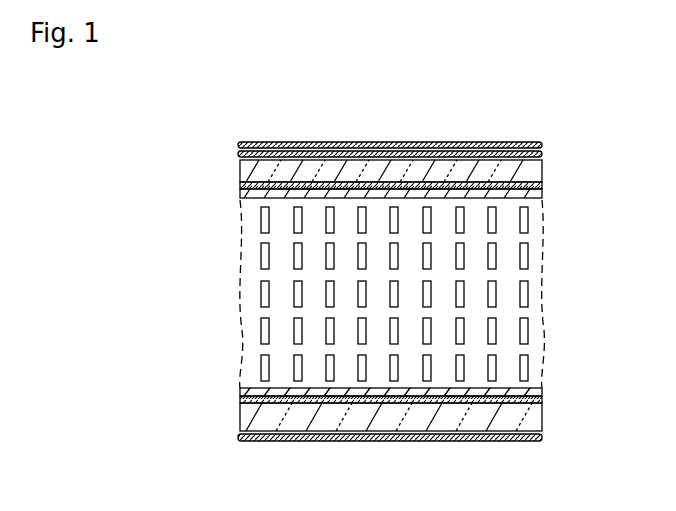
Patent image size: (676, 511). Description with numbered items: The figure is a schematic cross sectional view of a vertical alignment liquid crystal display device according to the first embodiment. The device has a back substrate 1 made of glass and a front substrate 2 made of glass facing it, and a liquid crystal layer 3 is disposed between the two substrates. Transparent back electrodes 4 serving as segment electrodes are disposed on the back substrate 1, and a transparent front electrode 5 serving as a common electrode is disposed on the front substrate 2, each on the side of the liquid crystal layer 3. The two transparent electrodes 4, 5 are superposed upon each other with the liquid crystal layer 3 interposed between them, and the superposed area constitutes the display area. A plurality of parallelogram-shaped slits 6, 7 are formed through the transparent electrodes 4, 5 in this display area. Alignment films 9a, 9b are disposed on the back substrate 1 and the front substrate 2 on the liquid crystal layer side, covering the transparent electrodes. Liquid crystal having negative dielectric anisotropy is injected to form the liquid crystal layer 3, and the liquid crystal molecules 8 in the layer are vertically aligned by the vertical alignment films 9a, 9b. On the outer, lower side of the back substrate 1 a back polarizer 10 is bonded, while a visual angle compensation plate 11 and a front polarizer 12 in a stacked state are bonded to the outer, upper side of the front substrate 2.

The back substrate 1 is at (236, 414).
The front substrate 2 is at (236, 174).
The liquid crystal layer 3 is at (556, 197).
The transparent back electrodes 4 is at (371, 405).
The transparent front electrode 5 is at (346, 193).
The slits 6 is at (333, 403).
The slits 7 is at (300, 186).
The liquid crystal molecules 8 is at (265, 258).
The alignment film 9a is at (238, 392).
The alignment film 9b is at (240, 195).
The back polarizer 10 is at (240, 437).
The visual angle compensation plate 11 is at (238, 154).
The front polarizer 12 is at (238, 144).